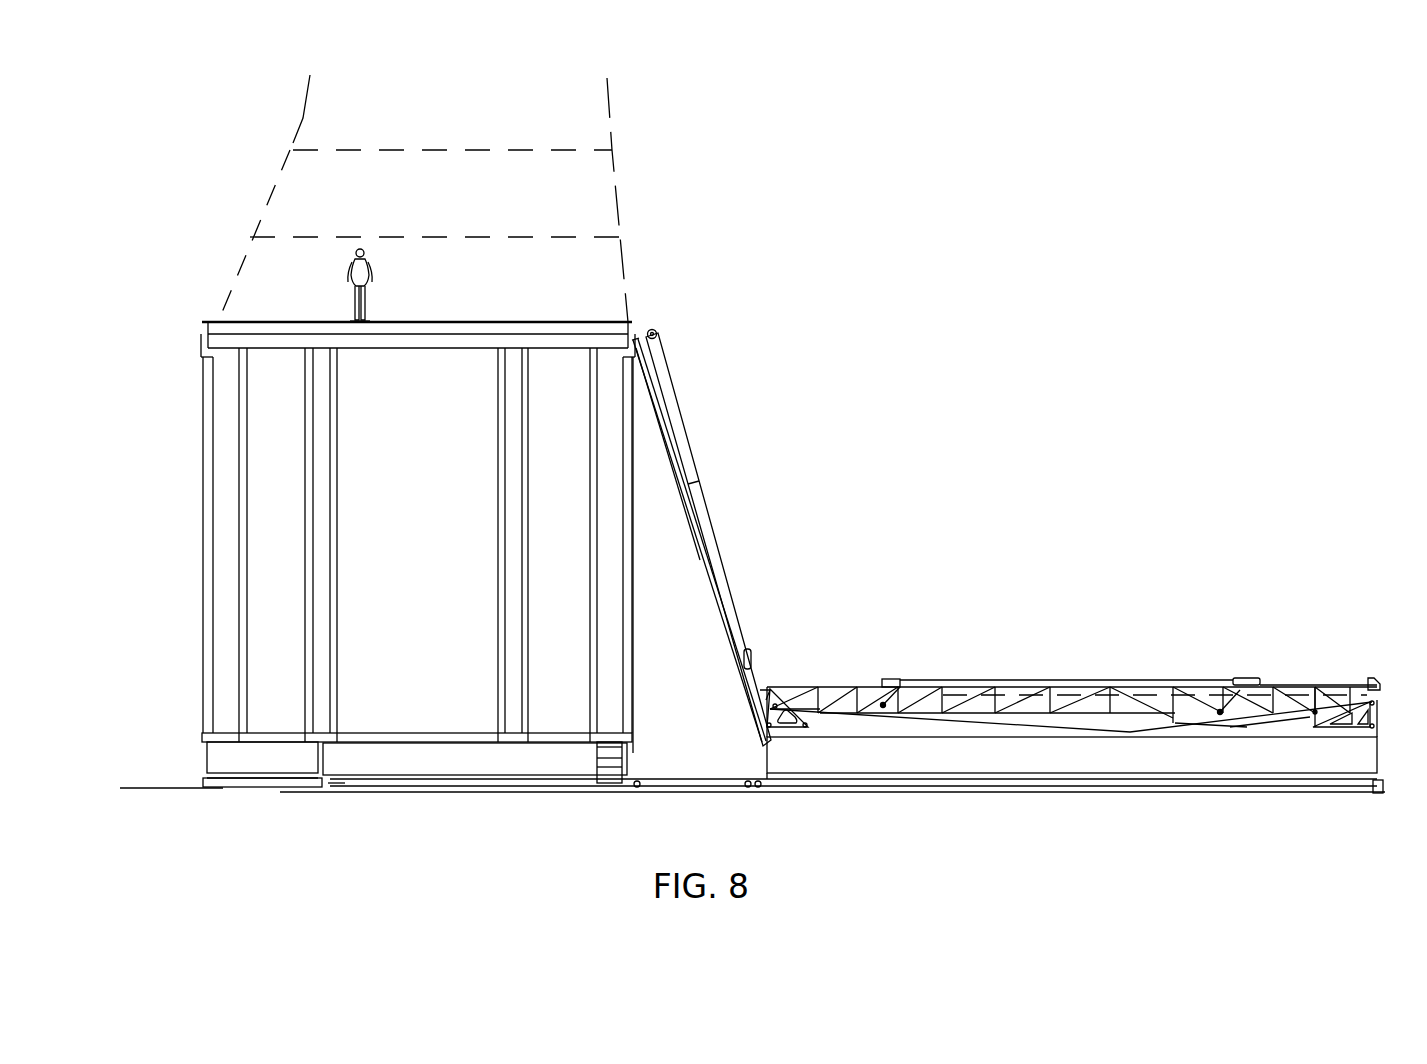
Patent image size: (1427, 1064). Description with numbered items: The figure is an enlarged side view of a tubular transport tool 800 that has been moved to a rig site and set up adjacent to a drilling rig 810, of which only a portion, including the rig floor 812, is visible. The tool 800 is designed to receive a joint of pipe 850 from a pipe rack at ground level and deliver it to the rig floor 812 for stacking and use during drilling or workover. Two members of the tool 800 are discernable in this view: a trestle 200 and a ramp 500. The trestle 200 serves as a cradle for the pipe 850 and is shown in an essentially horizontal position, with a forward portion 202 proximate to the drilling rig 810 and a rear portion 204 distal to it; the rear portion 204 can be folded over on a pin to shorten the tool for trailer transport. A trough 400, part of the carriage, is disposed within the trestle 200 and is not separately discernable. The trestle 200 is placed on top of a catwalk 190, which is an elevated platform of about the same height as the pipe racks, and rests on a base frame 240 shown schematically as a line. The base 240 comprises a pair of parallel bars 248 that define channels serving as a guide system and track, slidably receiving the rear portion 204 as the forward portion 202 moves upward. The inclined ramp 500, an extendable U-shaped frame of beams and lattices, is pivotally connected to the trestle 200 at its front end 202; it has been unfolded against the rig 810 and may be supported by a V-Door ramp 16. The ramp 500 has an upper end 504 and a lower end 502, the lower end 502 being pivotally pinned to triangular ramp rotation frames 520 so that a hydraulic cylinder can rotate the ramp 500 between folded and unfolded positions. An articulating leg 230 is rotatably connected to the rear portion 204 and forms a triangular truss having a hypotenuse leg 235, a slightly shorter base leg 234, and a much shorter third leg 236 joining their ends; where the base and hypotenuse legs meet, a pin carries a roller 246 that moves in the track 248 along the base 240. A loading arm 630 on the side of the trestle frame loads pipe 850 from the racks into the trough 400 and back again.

The tubular transport tool 800 is at (999, 458).
The drilling rig 810 is at (172, 313).
The rig floor 812 is at (292, 320).
The V-Door ramp 16 is at (650, 398).
The ramp 500 is at (752, 580).
The upper end 504 is at (661, 440).
The lower end 502 is at (766, 647).
The trestle 200 is at (1144, 668).
The forward portion 202 is at (830, 676).
The joint of pipe 850 is at (943, 684).
The trough 400 is at (970, 695).
The base frame 240 is at (1177, 725).
The rear portion 204 is at (1334, 679).
The articulating leg 230 is at (1390, 707).
The base leg 234 is at (1315, 712).
The hypotenuse leg 235 is at (1317, 730).
The third leg 236 is at (1380, 720).
The roller 246 is at (1291, 735).
The parallel bars 248 is at (1247, 727).
The loading arm 630 is at (890, 713).
The triangular frames 520 is at (787, 733).
The catwalk 190 is at (763, 748).